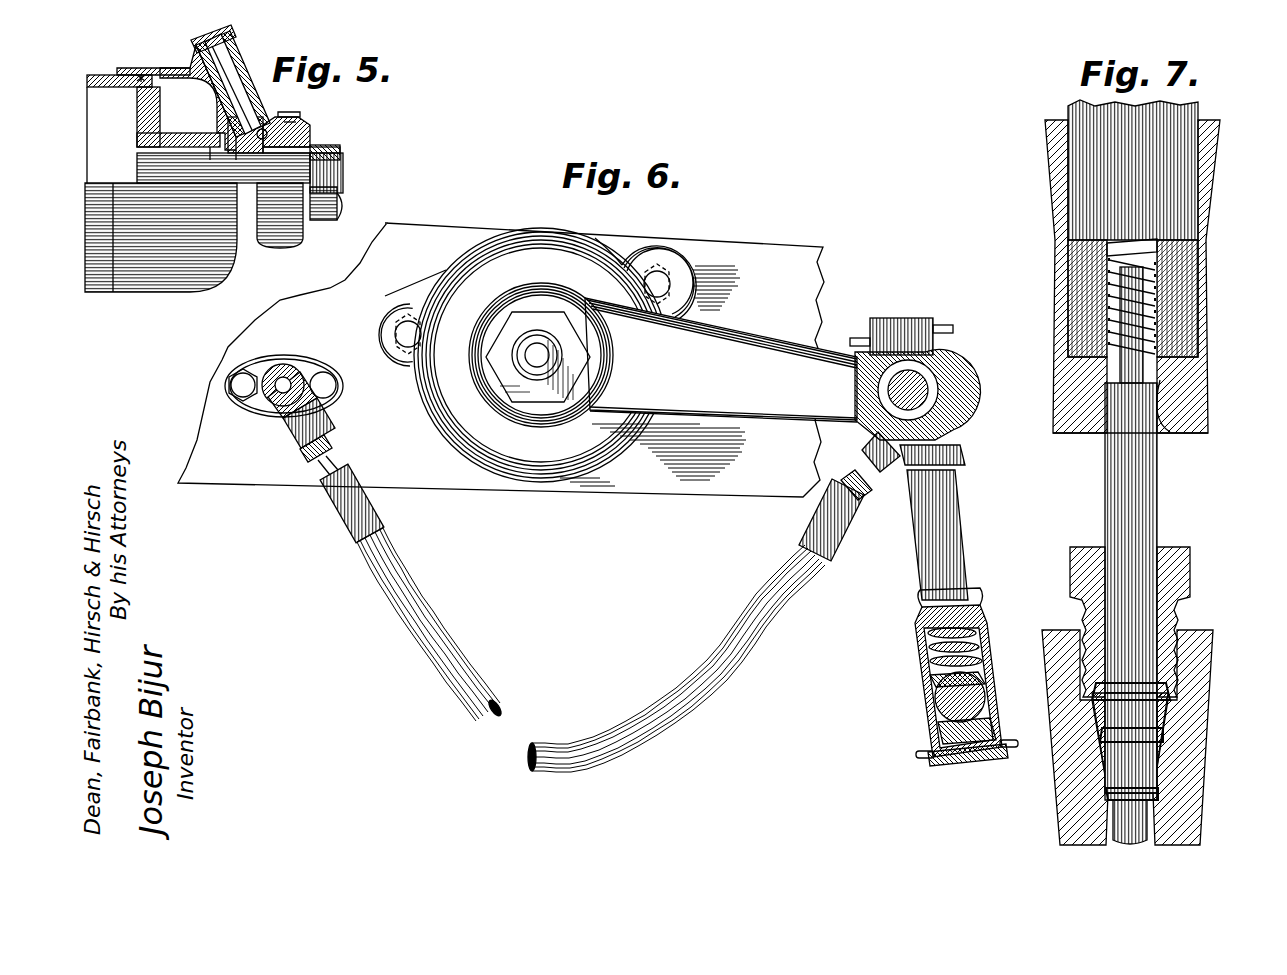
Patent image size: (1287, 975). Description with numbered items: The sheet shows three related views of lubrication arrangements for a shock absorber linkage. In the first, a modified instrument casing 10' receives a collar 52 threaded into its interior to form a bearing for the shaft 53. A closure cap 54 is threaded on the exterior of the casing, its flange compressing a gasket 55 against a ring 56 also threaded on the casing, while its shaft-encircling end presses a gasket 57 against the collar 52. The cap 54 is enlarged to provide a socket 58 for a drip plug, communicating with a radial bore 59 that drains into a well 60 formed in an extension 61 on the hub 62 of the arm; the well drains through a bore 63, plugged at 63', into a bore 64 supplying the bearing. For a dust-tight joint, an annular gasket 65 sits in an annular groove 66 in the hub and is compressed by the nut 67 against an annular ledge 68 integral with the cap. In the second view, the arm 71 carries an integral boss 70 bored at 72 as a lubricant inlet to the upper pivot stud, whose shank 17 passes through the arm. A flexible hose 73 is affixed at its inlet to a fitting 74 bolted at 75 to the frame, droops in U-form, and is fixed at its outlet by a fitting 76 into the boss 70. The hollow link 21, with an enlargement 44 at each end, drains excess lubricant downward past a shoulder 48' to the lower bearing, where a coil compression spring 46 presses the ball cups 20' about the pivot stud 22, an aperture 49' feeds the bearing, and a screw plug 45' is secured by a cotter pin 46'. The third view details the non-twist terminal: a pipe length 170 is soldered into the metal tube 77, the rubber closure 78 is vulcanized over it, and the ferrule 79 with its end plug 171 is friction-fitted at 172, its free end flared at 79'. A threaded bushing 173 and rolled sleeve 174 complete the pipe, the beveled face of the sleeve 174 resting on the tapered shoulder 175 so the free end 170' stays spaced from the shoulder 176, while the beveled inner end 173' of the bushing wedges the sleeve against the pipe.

In FIG. 5, the instrument casing 10' is at (117, 61).
In FIG. 5, the collar 52 is at (142, 118).
In FIG. 5, the shaft 53 is at (258, 176).
In FIG. 5, the closure cap 54 is at (223, 66).
In FIG. 5, the gasket 55 is at (143, 77).
In FIG. 5, the ring 56 is at (126, 68).
In FIG. 5, the gasket 57 is at (212, 150).
In FIG. 5, the socket 58 is at (214, 44).
In FIG. 5, the bore 59 is at (244, 99).
In FIG. 5, the well 60 is at (244, 132).
In FIG. 5, the extension 61 is at (305, 122).
In FIG. 5, the hub 62 is at (338, 148).
In FIG. 5, the bore 63 is at (300, 200).
In FIG. 5, the plug 63' is at (201, 245).
In FIG. 5, the bore 64 is at (312, 138).
In FIG. 5, the annular gasket 65 is at (290, 118).
In FIG. 5, the annular groove 66 is at (298, 122).
In FIG. 5, the nut 67 is at (345, 162).
In FIG. 5, the annular ledge 68 is at (266, 130).
In FIG. 6, the arm 71 is at (780, 360).
In FIG. 6, the enlargement 44 is at (935, 336).
In FIG. 6, the shank 17 is at (927, 392).
In FIG. 6, the bore 72 is at (945, 420).
In FIG. 6, the boss 70 is at (872, 437).
In FIG. 6, the fitting 76 is at (872, 480).
In FIG. 6, the link 21 is at (917, 556).
In FIG. 6, the shoulder 48' is at (927, 608).
In FIG. 6, the coil compression spring 46 is at (922, 647).
In FIG. 6, the aperture 49' is at (936, 710).
In FIG. 6, the ball cups 20' is at (976, 681).
In FIG. 6, the pivot stud 22 is at (945, 702).
In FIG. 6, the holding ring or cotter pin 46' is at (949, 761).
In FIG. 6, the screw plug 45' is at (966, 780).
In FIG. 6, the fitting 74 is at (305, 370).
In FIG. 6, the bolt 75 is at (338, 387).
In FIG. 6, the flexible hose 73 is at (490, 765).
In FIG. 7, the flared end 79' is at (1165, 170).
In FIG. 7, the rubber closure 78 is at (1185, 262).
In FIG. 7, the metal tube 77 is at (1160, 280).
In FIG. 7, the ferrule 79 is at (1153, 276).
In FIG. 7, the end plug 171 is at (1175, 425).
In FIG. 7, the friction fit 172 is at (1140, 440).
In FIG. 7, the pipe length 170 is at (1165, 591).
In FIG. 7, the threaded bushing 173 is at (1160, 622).
In FIG. 7, the beveled inner end 173' is at (1169, 683).
In FIG. 7, the sleeve 174 is at (1160, 714).
In FIG. 7, the tapered shoulder 175 is at (1162, 740).
In FIG. 7, the free end 170' is at (1171, 791).
In FIG. 7, the shoulder 176 is at (1150, 806).